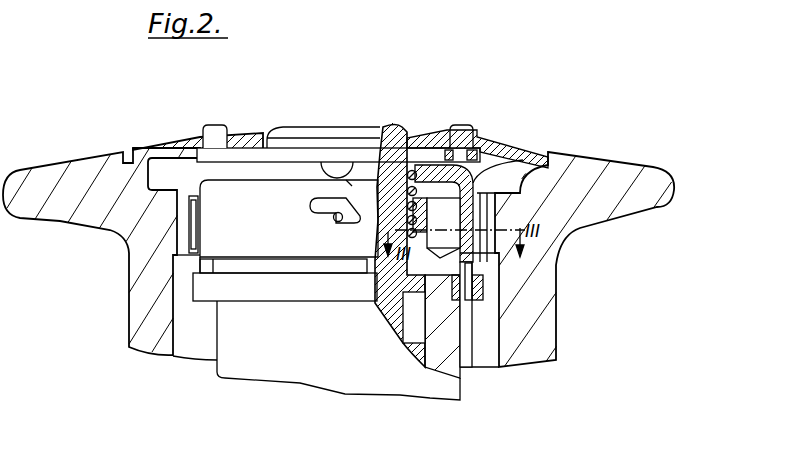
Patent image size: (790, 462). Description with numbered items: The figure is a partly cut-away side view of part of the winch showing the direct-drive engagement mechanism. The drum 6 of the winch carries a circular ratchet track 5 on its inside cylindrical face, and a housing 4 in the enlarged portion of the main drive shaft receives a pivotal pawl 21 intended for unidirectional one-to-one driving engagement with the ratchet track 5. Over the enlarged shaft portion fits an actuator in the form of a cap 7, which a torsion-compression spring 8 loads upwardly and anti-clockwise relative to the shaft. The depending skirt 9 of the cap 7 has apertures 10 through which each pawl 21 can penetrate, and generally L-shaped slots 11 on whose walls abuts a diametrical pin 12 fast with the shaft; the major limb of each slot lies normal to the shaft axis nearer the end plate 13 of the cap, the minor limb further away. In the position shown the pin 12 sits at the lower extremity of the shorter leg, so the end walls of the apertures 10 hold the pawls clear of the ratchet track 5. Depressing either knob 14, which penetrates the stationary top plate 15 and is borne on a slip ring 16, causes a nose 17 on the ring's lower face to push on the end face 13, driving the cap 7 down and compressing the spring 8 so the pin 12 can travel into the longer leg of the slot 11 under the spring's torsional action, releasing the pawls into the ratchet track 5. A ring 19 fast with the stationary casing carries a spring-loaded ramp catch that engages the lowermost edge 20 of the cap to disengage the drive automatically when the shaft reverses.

The housing 4 is at (440, 212).
The ratchet track 5 is at (490, 209).
The drum 6 is at (655, 187).
The cap 7 is at (272, 229).
The torsion-compression spring 8 is at (408, 218).
The skirt 9 is at (212, 227).
The apertures 10 is at (474, 184).
The L-shaped slots 11 is at (350, 183).
The diametrical pin 12 is at (335, 222).
The end plate 13 is at (256, 165).
The knobs 14 is at (214, 138).
The stationary top plate 15 is at (473, 148).
The slip ring 16 is at (285, 143).
The noses 17 is at (332, 163).
The ring 19 is at (188, 359).
The lowermost edge 20 is at (210, 262).
The pawl 21 is at (197, 215).